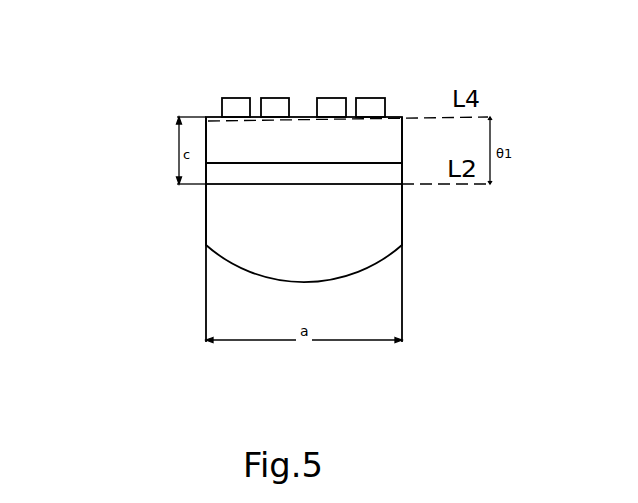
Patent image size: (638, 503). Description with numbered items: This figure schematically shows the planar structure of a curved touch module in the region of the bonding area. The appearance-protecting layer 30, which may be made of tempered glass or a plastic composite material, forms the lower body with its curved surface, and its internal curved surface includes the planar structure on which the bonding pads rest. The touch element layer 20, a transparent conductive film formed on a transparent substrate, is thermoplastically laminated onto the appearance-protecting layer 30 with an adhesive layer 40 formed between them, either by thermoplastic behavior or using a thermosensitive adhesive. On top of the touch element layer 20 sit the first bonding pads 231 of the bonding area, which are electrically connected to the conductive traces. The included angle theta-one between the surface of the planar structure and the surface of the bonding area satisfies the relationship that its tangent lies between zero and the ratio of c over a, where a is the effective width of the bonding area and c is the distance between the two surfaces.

The touch element layer 20 is at (217, 118).
The first bonding pads 231 is at (230, 98).
The appearance-protecting layer 30 is at (206, 215).
The adhesive layer 40 is at (402, 173).